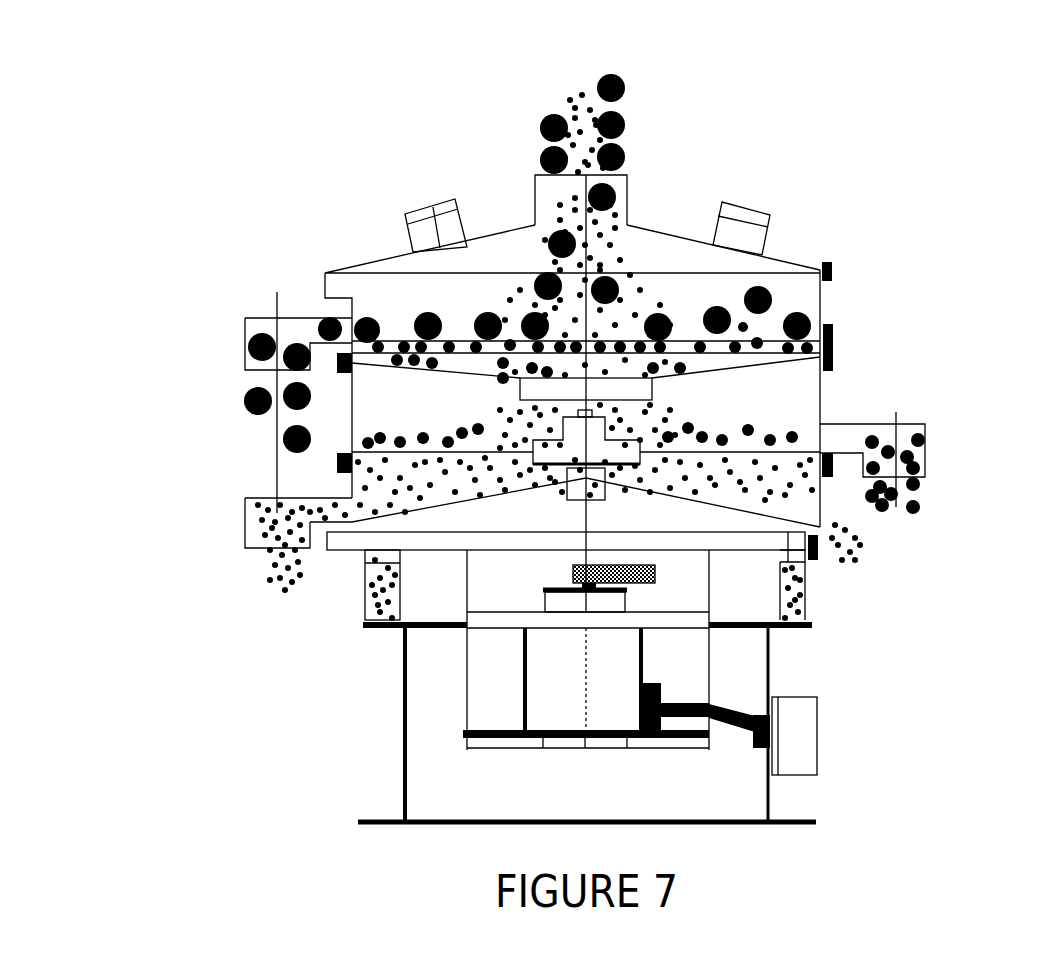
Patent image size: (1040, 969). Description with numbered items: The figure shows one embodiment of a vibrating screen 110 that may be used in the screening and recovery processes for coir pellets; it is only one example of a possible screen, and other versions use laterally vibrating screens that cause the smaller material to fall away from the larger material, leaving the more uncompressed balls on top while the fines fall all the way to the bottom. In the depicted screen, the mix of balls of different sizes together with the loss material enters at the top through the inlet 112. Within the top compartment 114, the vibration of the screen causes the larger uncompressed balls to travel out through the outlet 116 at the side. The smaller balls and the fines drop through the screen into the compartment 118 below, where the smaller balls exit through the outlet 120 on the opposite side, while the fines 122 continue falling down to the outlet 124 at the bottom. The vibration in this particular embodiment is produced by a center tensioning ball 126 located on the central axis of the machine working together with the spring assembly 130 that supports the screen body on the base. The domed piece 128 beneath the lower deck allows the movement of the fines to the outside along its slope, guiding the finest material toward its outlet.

The vibrating screen 110 is at (958, 84).
The inlet 112 is at (628, 178).
The top compartment 114 is at (812, 302).
The outlet 116 is at (250, 318).
The compartment 118 is at (812, 412).
The outlet 120 is at (925, 427).
The fines 122 is at (370, 477).
The outlet 124 is at (243, 518).
The center tensioning ball 126 is at (588, 432).
The domed piece 128 is at (432, 520).
The spring assembly 130 is at (805, 597).